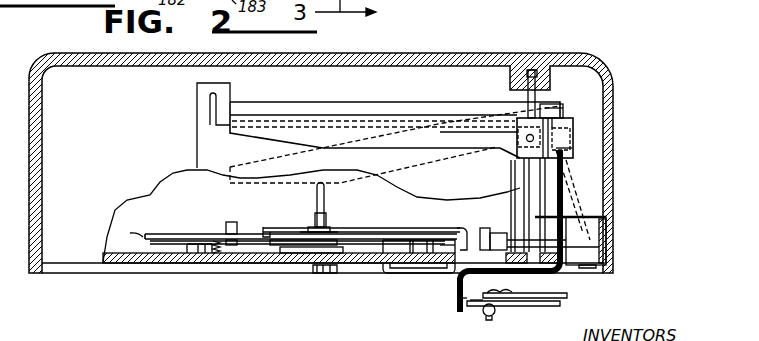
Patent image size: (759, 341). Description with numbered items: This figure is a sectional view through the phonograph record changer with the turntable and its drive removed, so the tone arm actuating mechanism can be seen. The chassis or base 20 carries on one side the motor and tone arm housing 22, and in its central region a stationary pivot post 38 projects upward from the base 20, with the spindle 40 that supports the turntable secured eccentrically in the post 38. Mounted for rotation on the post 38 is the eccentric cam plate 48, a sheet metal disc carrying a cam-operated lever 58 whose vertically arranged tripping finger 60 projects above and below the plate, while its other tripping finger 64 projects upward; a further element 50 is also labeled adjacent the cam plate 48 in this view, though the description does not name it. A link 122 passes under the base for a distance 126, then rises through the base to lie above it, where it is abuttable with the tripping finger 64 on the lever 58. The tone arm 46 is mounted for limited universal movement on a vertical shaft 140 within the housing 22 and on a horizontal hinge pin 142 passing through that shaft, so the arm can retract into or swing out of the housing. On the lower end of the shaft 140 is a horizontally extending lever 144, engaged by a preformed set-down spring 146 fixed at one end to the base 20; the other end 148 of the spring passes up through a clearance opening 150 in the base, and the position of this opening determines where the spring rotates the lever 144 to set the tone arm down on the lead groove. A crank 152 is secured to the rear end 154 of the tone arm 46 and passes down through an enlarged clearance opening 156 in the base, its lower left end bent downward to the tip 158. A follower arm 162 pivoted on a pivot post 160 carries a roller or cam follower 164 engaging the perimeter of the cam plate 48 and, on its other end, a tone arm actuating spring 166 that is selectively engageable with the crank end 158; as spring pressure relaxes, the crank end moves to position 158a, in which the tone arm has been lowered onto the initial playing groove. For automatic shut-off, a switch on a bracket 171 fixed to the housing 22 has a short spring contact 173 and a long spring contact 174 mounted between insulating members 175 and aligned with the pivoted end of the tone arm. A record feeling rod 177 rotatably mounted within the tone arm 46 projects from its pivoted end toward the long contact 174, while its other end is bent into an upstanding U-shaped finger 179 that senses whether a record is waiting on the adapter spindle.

The chassis or base 20 is at (199, 263).
The motor and tone arm housing 22 is at (488, 0).
The pivot post 38 is at (300, 246).
The spindle 40 is at (326, 206).
The tone arm 46 is at (297, 118).
The eccentric cam plate 48 is at (159, 234).
The connector 50 is at (131, 225).
The cam-operated lever 58 is at (243, 233).
The tripping finger 60 is at (228, 222).
The tripping finger 64 is at (310, 228).
The link 122 is at (370, 229).
The distance 126 is at (566, 277).
The vertical shaft 140 is at (528, 95).
The horizontal hinge pin 142 is at (517, 135).
The lever 144 is at (490, 250).
The set-down spring 146 is at (397, 270).
The other end of the spring 148 is at (455, 268).
The clearance opening 150 is at (437, 273).
The crank 152 is at (571, 172).
The rear end of the tone arm 154 is at (552, 120).
The enlarged clearance opening 156 is at (595, 262).
The tip end of bent portion 158 is at (462, 300).
The position of crank end 158a is at (499, 322).
The pivot post 160 is at (478, 306).
The follower arm 162 is at (520, 302).
The roller or cam follower 164 is at (463, 229).
The tone arm actuating spring 166 is at (561, 301).
The bracket 171 is at (590, 220).
The short spring contact 173 is at (563, 148).
The long spring contact 174 is at (545, 108).
The insulating members 175 is at (545, 210).
The record feeling member 177 is at (345, 120).
The U-shaped finger 179 is at (217, 100).